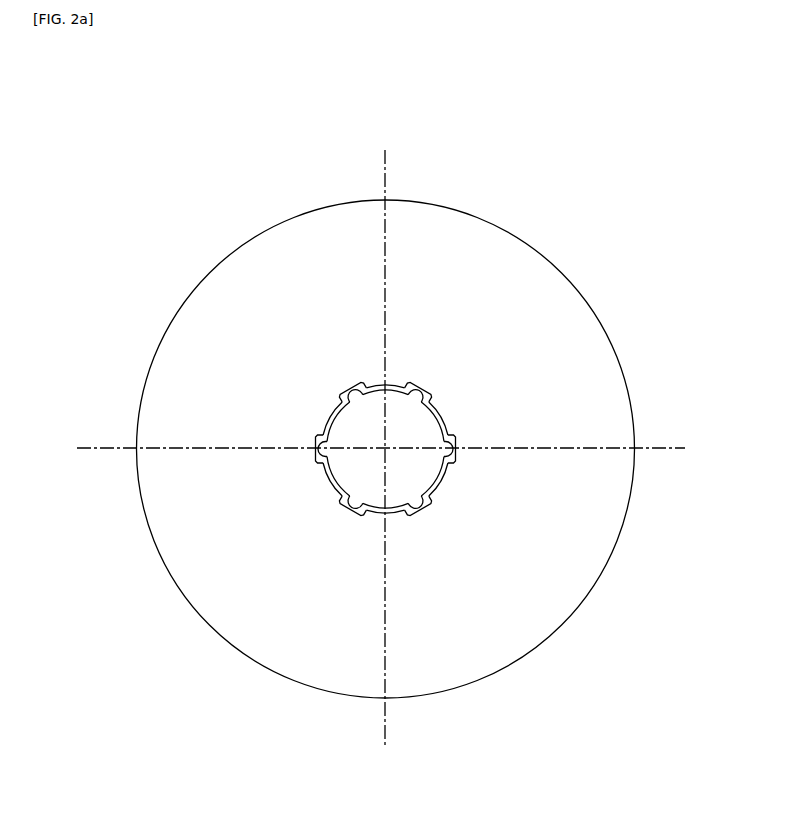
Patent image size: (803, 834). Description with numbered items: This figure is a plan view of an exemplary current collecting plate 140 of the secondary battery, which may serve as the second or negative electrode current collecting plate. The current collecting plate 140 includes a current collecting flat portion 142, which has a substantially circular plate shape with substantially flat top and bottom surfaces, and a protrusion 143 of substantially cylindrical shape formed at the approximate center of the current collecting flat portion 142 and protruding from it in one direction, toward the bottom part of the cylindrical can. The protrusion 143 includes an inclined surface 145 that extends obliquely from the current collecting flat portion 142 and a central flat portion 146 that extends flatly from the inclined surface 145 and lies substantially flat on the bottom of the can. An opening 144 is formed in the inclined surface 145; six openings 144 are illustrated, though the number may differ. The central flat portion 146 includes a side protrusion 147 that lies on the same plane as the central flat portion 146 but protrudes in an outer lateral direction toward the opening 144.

The current collecting plate 140 is at (537, 207).
The current collecting flat portion 142 is at (598, 387).
The protrusion 143 is at (333, 412).
The opening 144 is at (425, 510).
The inclined surface 145 is at (440, 412).
The central flat portion 146 is at (413, 470).
The side protrusion 147 is at (350, 503).